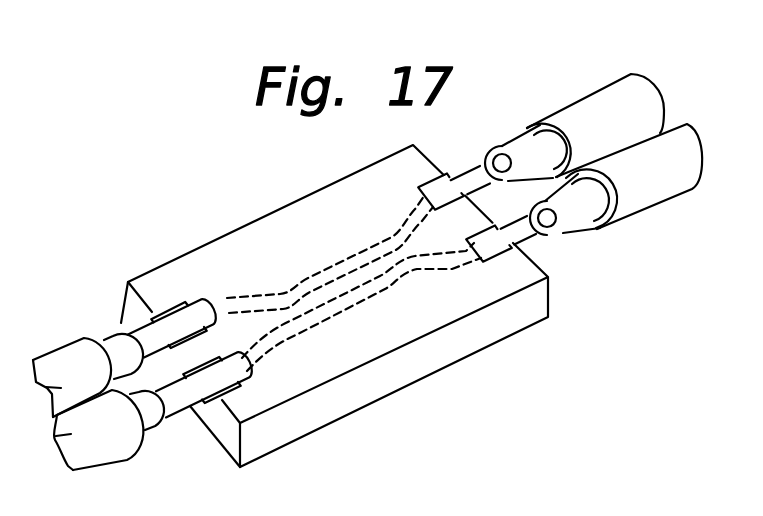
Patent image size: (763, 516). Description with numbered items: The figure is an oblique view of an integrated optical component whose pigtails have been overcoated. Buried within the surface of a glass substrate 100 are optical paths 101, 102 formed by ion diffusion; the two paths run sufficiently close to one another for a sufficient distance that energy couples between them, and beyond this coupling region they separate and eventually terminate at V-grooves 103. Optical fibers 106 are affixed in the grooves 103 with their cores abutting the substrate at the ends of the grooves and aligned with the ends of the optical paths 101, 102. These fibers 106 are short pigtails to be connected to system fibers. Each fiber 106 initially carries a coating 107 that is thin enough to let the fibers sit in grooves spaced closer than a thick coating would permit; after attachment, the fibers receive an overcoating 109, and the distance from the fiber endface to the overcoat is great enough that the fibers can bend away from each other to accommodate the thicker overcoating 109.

The glass substrate 100 is at (308, 194).
The optical path 101 is at (353, 257).
The optical path 102 is at (358, 299).
The V-groove 103 is at (222, 356).
The optical fiber 106 is at (128, 330).
The coating 107 is at (116, 344).
The overcoating 109 is at (60, 388).